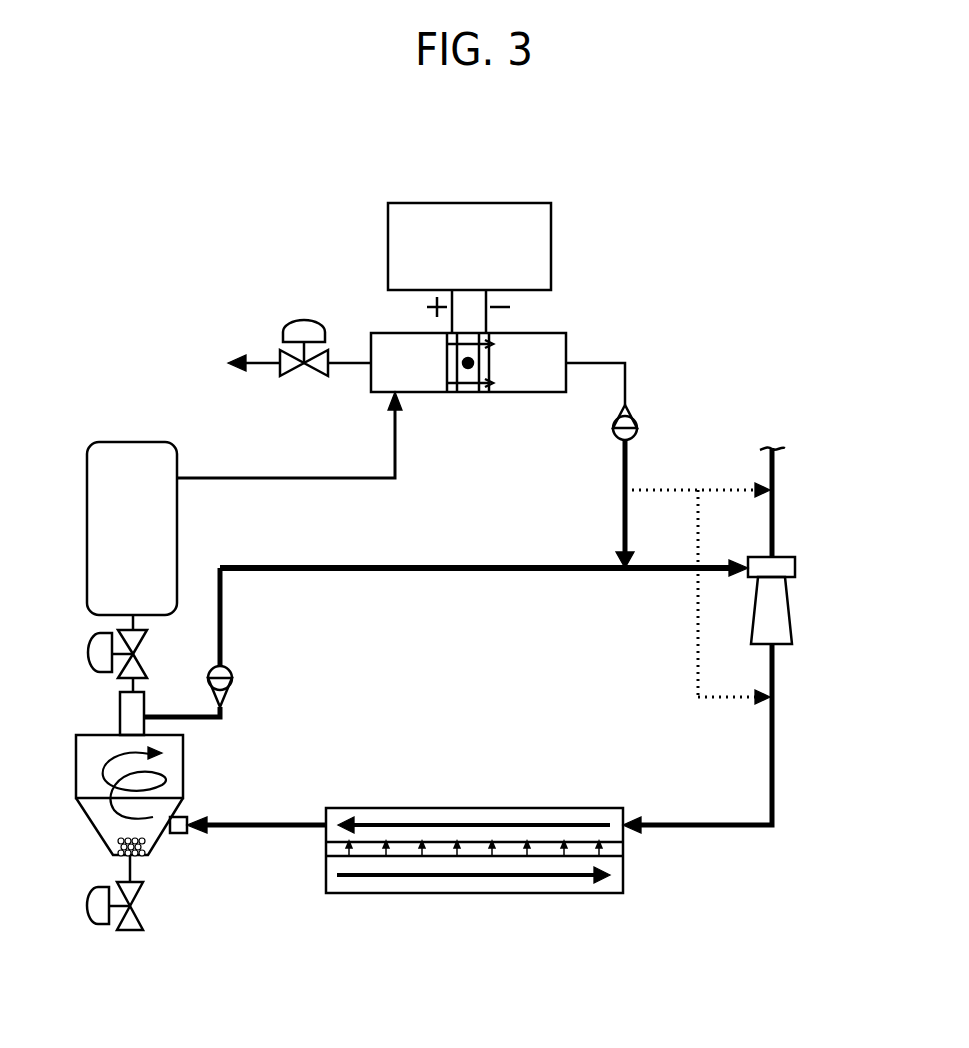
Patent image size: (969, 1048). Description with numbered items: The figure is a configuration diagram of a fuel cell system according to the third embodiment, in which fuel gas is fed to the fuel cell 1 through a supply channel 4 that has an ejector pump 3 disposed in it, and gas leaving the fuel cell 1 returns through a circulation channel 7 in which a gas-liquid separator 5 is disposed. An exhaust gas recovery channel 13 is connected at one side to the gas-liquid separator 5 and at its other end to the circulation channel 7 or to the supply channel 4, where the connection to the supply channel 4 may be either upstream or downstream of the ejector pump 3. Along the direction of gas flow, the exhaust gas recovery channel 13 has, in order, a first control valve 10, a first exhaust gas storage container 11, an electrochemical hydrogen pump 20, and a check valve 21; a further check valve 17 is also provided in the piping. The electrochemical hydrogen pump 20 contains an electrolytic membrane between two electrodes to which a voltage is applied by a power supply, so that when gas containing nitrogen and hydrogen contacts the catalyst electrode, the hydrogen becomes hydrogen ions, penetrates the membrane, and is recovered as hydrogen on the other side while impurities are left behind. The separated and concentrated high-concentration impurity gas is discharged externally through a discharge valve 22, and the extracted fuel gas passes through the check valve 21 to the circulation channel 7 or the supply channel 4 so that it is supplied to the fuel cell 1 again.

The fuel cell 1 is at (556, 805).
The ejector pump 3 is at (797, 563).
The supply channel 4 is at (774, 773).
The gas-liquid separator 5 is at (78, 768).
The circulation channel 7 is at (441, 565).
The first control valve 10 is at (88, 650).
The first exhaust gas storage container 11 is at (87, 535).
The exhaust gas recovery channel 13 is at (262, 478).
The check valve 17 is at (235, 675).
The electrochemical hydrogen pump 20 is at (386, 280).
The check valve 21 is at (638, 424).
The discharge valve 22 is at (302, 328).